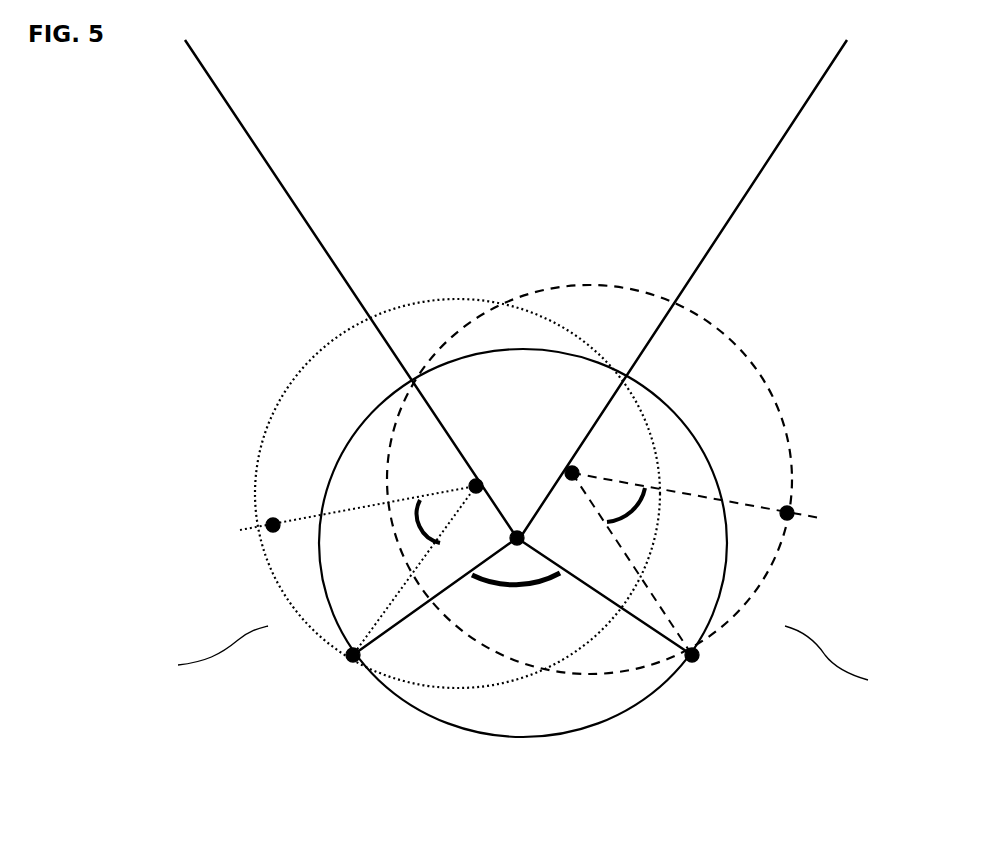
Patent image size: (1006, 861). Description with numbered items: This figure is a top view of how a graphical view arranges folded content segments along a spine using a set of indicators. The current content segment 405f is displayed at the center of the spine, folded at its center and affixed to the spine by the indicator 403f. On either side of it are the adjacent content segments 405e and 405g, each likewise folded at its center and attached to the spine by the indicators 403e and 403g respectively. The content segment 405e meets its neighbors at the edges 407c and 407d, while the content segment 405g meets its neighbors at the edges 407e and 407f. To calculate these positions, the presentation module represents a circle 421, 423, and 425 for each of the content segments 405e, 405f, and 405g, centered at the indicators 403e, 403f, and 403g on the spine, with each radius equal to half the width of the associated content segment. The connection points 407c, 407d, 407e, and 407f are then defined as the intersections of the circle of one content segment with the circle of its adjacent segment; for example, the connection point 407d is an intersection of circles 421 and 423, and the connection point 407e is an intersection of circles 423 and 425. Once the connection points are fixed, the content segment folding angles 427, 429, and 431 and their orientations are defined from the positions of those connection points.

The circle 421 is at (312, 350).
The circle 423 is at (523, 743).
The circle 425 is at (735, 343).
The indicator 403e is at (478, 480).
The indicator 403f is at (518, 532).
The indicator 403g is at (570, 466).
The content segment 405e is at (180, 652).
The current content segment 405f is at (523, 623).
The content segment 405g is at (849, 659).
The connection point 407c is at (268, 526).
The connection point 407d is at (350, 657).
The connection point 407e is at (693, 662).
The connection point 407f is at (792, 516).
The content segment folding angle 427 is at (422, 500).
The content segment folding angle 429 is at (536, 578).
The content segment folding angle 431 is at (626, 485).